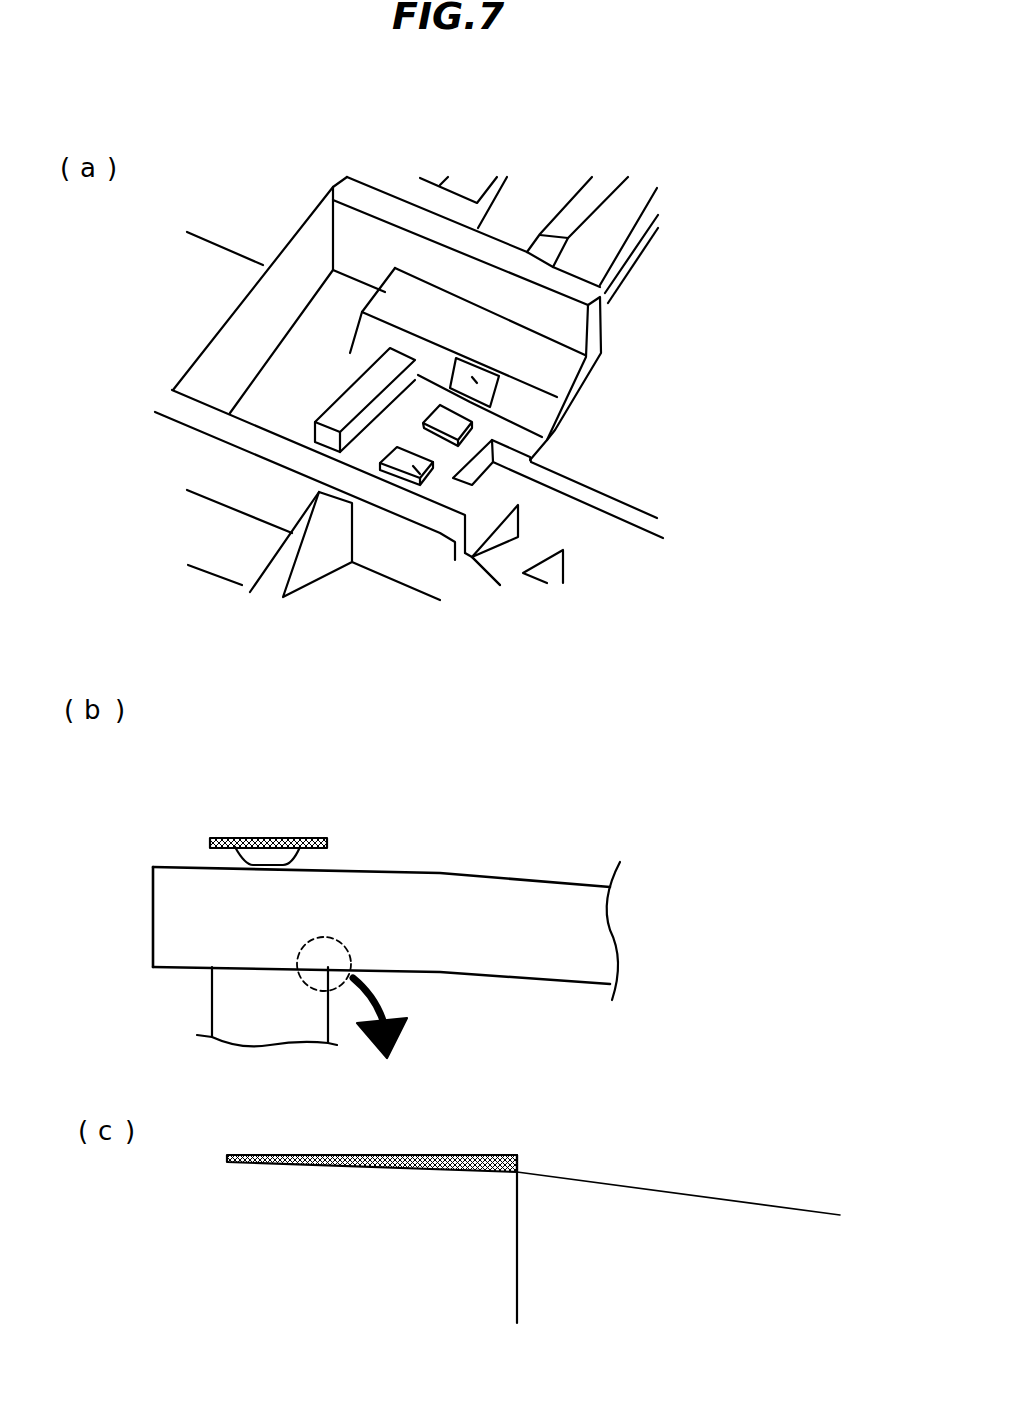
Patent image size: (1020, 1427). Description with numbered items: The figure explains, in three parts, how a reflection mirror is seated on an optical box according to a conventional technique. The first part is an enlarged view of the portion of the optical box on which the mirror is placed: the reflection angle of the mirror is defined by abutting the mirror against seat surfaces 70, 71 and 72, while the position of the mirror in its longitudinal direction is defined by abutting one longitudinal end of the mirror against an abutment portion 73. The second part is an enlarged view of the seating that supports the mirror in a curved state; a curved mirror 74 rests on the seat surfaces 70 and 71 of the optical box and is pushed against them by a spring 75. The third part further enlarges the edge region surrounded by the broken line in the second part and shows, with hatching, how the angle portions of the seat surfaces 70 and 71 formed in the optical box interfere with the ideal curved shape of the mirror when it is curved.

The seat surface 70 is at (420, 478).
The seat surface 71 is at (533, 458).
The seat surface 72 is at (488, 370).
The abutment portion 73 is at (333, 397).
The curved mirror 74 is at (465, 895).
The spring 75 is at (270, 840).